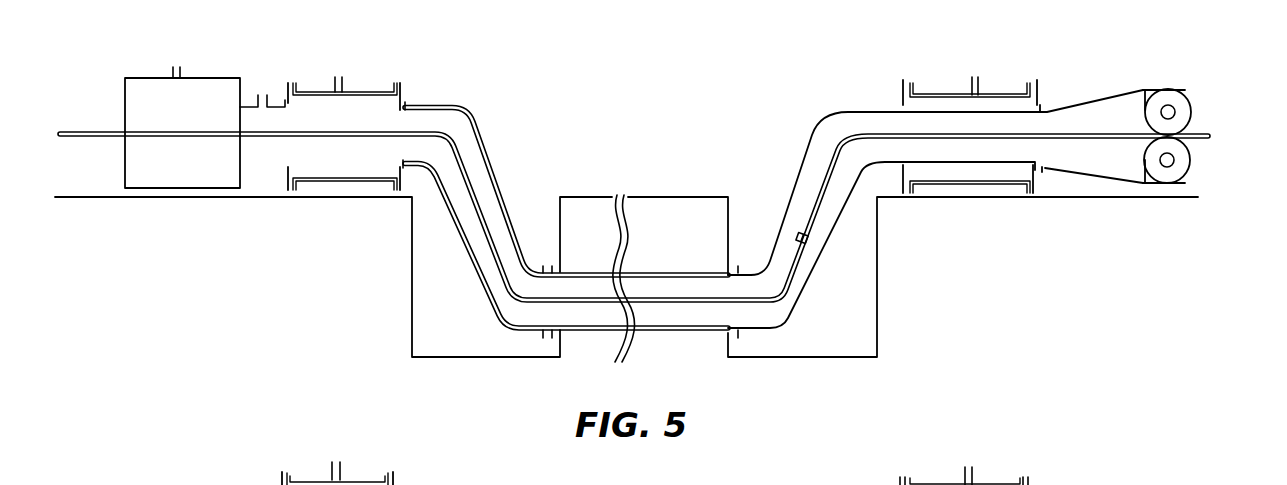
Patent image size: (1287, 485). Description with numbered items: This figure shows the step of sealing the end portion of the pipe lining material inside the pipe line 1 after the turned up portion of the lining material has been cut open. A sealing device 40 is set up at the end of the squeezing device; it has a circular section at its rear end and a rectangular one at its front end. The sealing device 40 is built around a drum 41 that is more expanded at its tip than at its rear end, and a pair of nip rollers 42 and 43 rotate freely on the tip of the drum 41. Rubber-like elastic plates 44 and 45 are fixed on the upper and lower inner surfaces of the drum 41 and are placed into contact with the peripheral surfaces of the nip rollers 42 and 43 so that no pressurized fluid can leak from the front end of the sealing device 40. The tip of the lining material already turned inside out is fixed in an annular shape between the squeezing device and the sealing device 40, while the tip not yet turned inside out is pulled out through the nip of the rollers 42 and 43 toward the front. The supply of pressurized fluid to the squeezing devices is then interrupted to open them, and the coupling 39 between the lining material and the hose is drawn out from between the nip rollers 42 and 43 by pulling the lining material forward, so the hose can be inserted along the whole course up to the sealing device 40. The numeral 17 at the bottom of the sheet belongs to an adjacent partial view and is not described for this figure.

The pipe line 1 is at (695, 274).
The web 17 is at (158, 479).
The coupling 39 is at (807, 238).
The sealing device 40 is at (1134, 84).
The drum 41 is at (1078, 103).
The nip roller 42 is at (1186, 102).
The nip roller 43 is at (1186, 165).
The rubber-like elastic plate 44 is at (1153, 90).
The rubber-like elastic plate 45 is at (1135, 174).